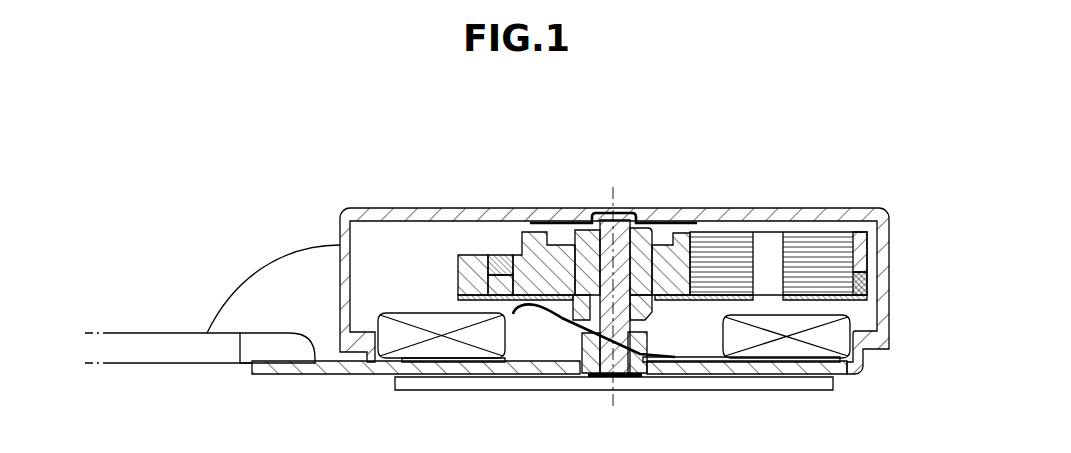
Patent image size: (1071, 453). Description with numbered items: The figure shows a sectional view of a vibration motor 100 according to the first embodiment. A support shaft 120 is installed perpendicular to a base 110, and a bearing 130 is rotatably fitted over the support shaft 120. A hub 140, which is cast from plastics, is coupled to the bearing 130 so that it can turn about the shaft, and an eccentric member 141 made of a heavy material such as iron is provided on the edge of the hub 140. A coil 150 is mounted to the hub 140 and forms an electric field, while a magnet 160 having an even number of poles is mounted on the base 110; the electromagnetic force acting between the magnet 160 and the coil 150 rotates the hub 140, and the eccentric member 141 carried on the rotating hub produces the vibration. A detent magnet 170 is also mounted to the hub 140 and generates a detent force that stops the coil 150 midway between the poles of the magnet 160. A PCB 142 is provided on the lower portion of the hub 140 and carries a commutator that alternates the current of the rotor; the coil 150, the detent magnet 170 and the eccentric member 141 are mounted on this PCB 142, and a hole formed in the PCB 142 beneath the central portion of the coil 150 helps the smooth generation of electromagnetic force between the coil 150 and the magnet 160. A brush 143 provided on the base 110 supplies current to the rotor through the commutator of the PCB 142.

The vibration motor 100 is at (307, 133).
The base 110 is at (357, 365).
The support shaft 120 is at (601, 222).
The bearing 130 is at (641, 238).
The hub 140 is at (677, 248).
The eccentric member 141 is at (867, 278).
The PCB 142 is at (482, 300).
The brush 143 is at (550, 300).
The coil 150 is at (820, 248).
The magnet 160 is at (790, 348).
The detent magnet 170 is at (502, 255).